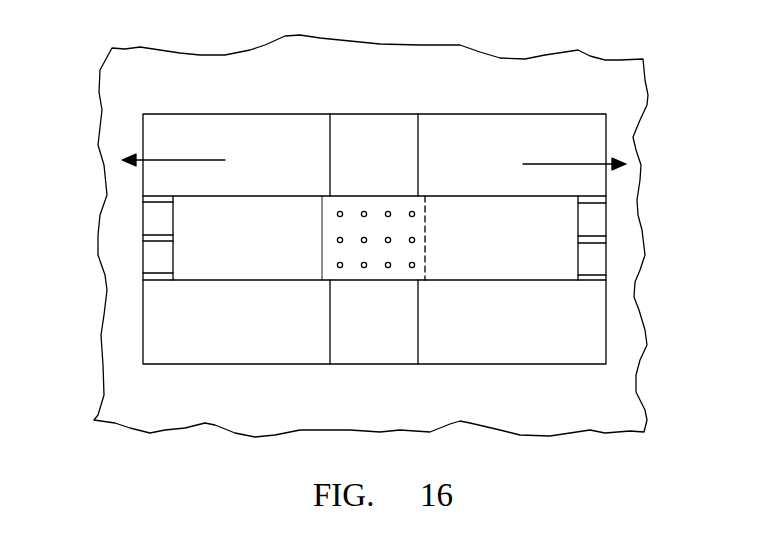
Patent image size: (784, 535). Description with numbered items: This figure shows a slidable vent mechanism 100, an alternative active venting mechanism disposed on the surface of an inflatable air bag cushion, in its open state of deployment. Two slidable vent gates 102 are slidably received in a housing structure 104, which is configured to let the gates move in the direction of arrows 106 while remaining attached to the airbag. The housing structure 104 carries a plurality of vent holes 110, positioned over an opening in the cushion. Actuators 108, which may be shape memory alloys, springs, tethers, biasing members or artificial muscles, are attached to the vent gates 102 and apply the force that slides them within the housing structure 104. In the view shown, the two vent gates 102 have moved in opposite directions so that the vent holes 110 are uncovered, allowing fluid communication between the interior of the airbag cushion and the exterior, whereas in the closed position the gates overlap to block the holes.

The slidable vent mechanism 100 is at (633, 90).
The slidable vent gate 102 is at (241, 268).
The housing structure 104 is at (459, 197).
The arrows 106 is at (174, 160).
The actuators 108 is at (157, 239).
The vent holes 110 is at (364, 268).